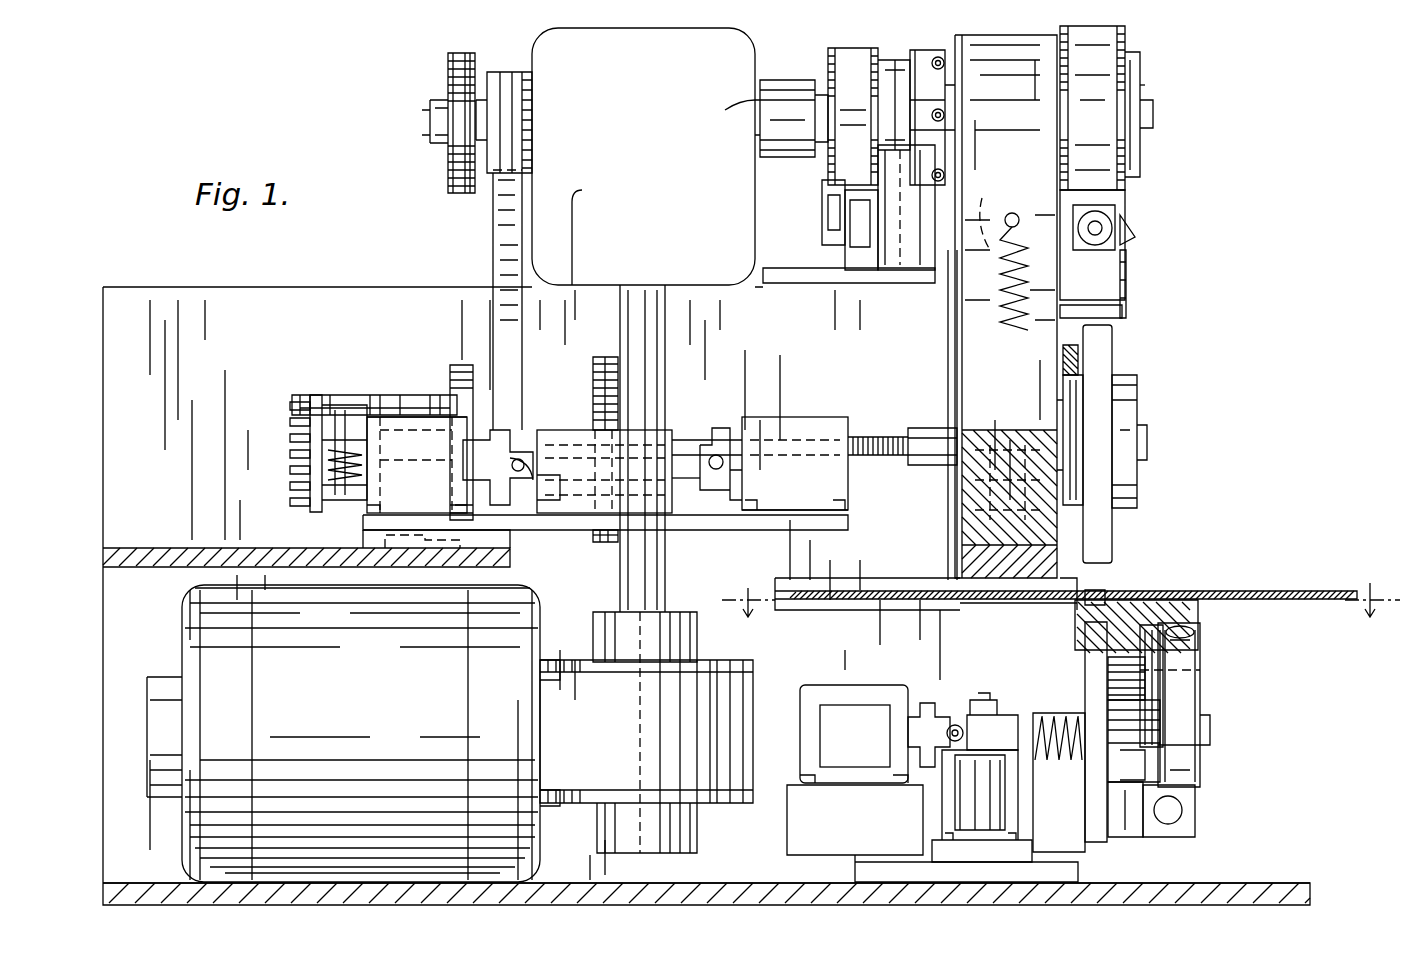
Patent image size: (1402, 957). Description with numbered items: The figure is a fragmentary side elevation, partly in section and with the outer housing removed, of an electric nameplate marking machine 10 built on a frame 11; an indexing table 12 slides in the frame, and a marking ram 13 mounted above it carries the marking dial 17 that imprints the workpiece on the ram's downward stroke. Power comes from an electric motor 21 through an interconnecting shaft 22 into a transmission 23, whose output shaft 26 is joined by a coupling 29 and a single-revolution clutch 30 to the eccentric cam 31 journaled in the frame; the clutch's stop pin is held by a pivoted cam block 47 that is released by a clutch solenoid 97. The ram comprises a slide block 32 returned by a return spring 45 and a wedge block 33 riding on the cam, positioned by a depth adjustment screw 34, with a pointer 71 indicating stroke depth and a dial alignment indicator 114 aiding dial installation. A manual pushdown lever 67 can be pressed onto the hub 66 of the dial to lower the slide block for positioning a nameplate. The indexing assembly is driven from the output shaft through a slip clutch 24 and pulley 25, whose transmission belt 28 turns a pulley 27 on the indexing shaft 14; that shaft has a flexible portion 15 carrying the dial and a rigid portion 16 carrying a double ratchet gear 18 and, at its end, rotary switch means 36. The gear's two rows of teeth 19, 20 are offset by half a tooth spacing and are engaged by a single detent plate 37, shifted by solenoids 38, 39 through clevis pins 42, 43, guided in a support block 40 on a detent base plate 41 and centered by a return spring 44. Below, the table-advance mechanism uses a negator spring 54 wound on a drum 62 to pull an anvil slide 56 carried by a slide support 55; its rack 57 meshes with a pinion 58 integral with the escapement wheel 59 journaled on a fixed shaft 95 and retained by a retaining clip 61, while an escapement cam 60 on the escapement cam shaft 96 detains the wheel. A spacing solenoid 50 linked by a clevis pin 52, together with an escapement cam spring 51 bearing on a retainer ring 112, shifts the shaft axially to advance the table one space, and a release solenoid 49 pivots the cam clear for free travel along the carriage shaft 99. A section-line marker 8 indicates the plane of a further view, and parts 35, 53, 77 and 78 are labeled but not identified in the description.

The section line 8- 8 is at (1061, 619).
The marking machine 10 is at (1157, 88).
The frame 11 is at (212, 315).
The indexing table 12 is at (1270, 598).
The marking ram 13 is at (1075, 322).
The indexing shaft 14 is at (886, 466).
The flexible portion 15 is at (892, 438).
The rigid portion 16 is at (682, 440).
The marking dial 17 is at (1112, 362).
The double ratchet gear 18 is at (590, 370).
The row of gear teeth 19 is at (608, 545).
The row of gear teeth 20 is at (595, 540).
The electric motor 21 is at (184, 620).
The interconnecting shaft 22 is at (660, 320).
The transmission 23 is at (655, 93).
The slip clutch 24 is at (465, 55).
The pulley 25 is at (492, 75).
The output shaft 26 is at (745, 115).
The pulley 27 is at (470, 422).
The transmission belt 28 is at (485, 207).
The coupling 29 is at (780, 92).
The single-revolution clutch 30 is at (848, 62).
The eccentric cam 31 is at (1110, 48).
The slide block 32 is at (950, 354).
The wedge block 33 is at (1112, 202).
The depth adjustment screw 34 is at (1100, 228).
The support 35 is at (1100, 592).
The rotary switch means 36 is at (343, 385).
The detent plate 37 is at (692, 488).
The solenoid 38 is at (800, 427).
The solenoid 39 is at (400, 418).
The detent plate support block 40 is at (655, 512).
The detent base plate 41 is at (738, 530).
The clevis pin 42 is at (712, 457).
The clevis pin 43 is at (590, 487).
The return spring 44 is at (330, 490).
The return spring 45 is at (1004, 248).
The cam block 47 is at (900, 254).
The release solenoid 49 is at (950, 815).
The spacing solenoid 50 is at (835, 715).
The escapement cam spring 51 is at (1010, 715).
The clevis pin 52 is at (945, 715).
The pawl unit 53 is at (1010, 794).
The negator spring 54 is at (1195, 652).
The slide support 55 is at (1090, 640).
The anvil slide 56 is at (1192, 613).
The rack 57 is at (1135, 655).
The pinion 58 is at (1110, 668).
The escapement wheel 59 is at (1150, 700).
The escapement cam 60 is at (1130, 760).
The retaining clip 61 is at (1163, 660).
The drum 62 is at (1205, 765).
The hub 66 is at (1078, 500).
The manual pushdown lever 67 is at (1065, 362).
The pointer 71 is at (1135, 235).
The bracket 77 is at (455, 545).
The rod 78 is at (458, 365).
The shaft 95 is at (1160, 678).
The escapement cam shaft 96 is at (960, 723).
The clutch solenoid 97 is at (825, 228).
The carriage shaft 99 is at (1182, 812).
The retainer ring 112 is at (1075, 717).
The dial alignment indicator 114 is at (1125, 305).